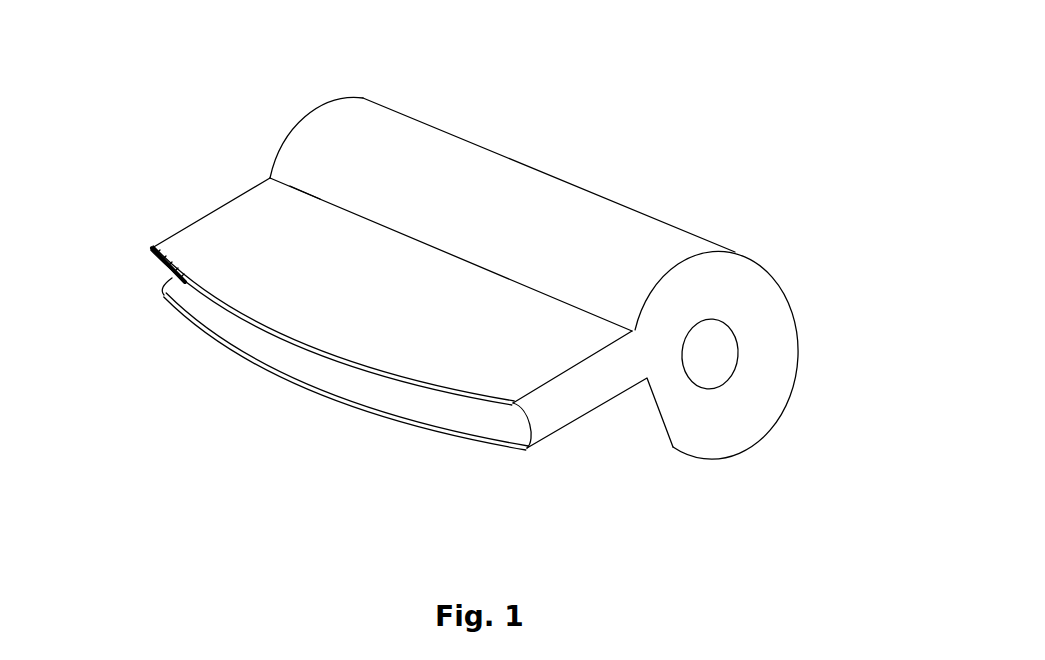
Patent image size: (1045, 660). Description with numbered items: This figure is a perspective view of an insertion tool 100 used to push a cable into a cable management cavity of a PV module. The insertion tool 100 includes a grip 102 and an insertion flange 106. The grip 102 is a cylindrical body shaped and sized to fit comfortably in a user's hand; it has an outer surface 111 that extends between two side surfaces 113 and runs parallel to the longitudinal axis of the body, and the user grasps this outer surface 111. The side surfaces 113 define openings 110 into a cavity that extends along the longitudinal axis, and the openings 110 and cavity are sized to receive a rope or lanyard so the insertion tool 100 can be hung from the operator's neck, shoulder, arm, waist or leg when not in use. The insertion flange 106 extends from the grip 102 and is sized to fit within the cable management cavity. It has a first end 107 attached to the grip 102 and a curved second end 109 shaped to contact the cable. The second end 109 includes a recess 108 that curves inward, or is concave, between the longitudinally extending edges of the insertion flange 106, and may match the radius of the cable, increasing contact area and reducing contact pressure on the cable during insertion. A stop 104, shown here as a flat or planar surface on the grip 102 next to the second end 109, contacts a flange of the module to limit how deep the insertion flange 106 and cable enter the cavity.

The insertion tool 100 is at (383, 84).
The grip 102 is at (533, 188).
The stop 104 is at (642, 423).
The insertion flange 106 is at (250, 240).
The first end 107 is at (308, 190).
The recess 108 is at (388, 402).
The second end 109 is at (185, 280).
The openings 110 is at (712, 360).
The outer surface 111 is at (425, 157).
The side surfaces 113 is at (770, 298).